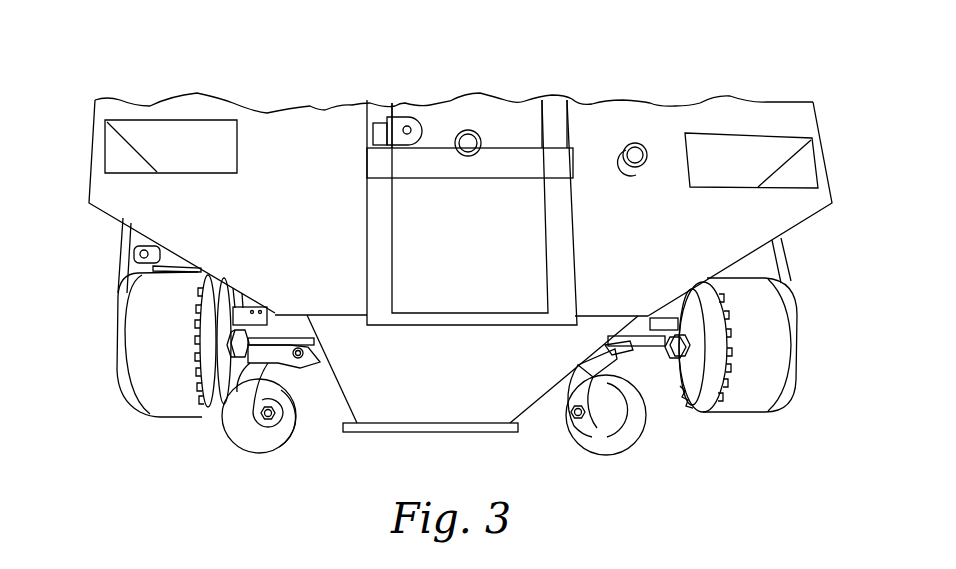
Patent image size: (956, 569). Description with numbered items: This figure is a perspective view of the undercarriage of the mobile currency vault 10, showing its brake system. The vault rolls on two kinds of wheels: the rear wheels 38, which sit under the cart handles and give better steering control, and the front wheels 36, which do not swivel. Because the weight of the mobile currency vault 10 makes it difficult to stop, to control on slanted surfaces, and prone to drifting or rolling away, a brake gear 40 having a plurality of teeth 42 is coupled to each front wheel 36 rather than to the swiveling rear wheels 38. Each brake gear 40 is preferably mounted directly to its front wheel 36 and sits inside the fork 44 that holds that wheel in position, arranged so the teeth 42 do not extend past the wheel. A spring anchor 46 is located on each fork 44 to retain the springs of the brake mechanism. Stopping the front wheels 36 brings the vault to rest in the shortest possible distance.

The mobile currency vault 10 is at (440, 72).
The front wheels 36 is at (153, 357).
The rear wheels 38 is at (260, 445).
The brake gear 40 is at (210, 415).
The teeth 42 is at (197, 335).
The fork 44 is at (123, 241).
The spring anchor 46 is at (245, 307).